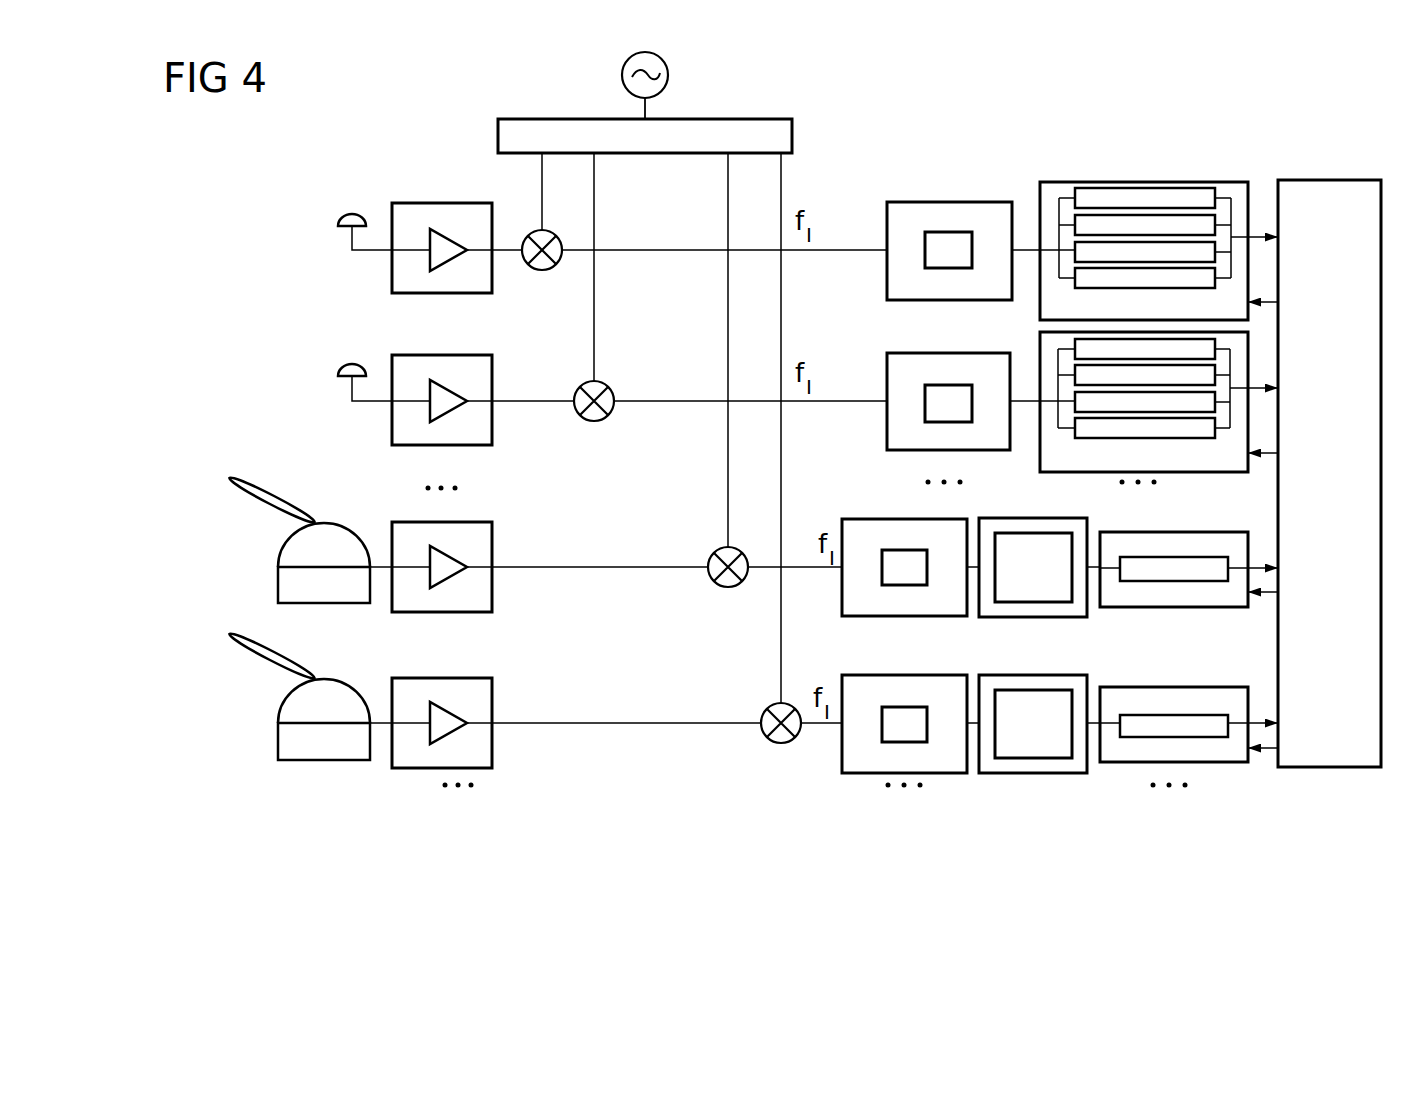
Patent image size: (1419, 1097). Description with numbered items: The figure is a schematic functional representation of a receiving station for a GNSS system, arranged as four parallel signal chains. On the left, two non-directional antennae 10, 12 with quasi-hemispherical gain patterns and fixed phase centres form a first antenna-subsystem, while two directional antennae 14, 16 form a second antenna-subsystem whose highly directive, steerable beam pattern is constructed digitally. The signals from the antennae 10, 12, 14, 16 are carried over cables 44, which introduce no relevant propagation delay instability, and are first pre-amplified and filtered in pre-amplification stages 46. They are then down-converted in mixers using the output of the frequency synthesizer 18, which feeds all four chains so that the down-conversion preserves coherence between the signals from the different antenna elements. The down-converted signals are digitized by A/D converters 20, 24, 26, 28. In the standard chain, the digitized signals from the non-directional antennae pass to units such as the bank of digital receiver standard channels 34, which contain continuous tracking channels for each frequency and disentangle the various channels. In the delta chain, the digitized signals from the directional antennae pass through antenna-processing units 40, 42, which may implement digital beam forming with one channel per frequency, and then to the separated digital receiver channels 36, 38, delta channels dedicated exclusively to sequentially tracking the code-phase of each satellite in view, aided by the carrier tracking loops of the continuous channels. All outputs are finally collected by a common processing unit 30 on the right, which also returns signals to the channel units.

The non-directed channel antenna-subsystem 10 is at (355, 208).
The non-directed channel antenna-subsystem 12 is at (347, 364).
The directional antenna-subsystem 14 is at (328, 522).
The directional antenna-subsystem 16 is at (329, 678).
The frequency synthesizer 18 is at (767, 128).
The A/D converter 20 is at (886, 210).
The A/D converter 24 is at (886, 363).
The A/D converter 26 is at (878, 519).
The A/D converter 28 is at (868, 773).
The evaluation unit 30 is at (1340, 178).
The bank of digital receiver standard channels 34 is at (1040, 466).
The separated digital receiver channel 36 is at (1208, 607).
The separated digital receiver channel 38 is at (1120, 762).
The antenna-processing unit 40 is at (1048, 195).
The antenna-processing unit 42 is at (1032, 773).
The cable 44 is at (545, 401).
The pre-amplification stage 46 is at (413, 768).